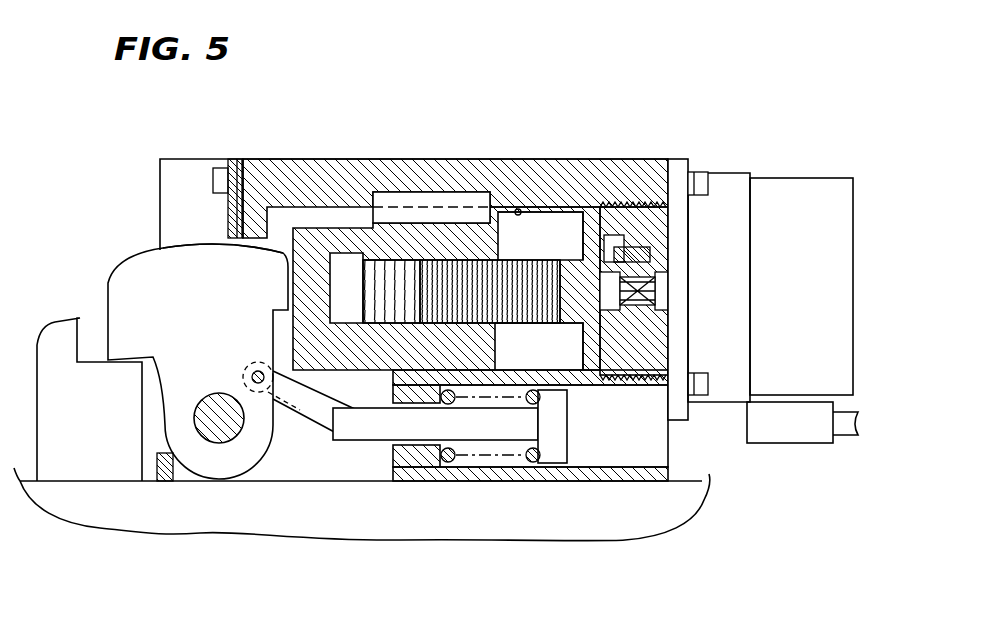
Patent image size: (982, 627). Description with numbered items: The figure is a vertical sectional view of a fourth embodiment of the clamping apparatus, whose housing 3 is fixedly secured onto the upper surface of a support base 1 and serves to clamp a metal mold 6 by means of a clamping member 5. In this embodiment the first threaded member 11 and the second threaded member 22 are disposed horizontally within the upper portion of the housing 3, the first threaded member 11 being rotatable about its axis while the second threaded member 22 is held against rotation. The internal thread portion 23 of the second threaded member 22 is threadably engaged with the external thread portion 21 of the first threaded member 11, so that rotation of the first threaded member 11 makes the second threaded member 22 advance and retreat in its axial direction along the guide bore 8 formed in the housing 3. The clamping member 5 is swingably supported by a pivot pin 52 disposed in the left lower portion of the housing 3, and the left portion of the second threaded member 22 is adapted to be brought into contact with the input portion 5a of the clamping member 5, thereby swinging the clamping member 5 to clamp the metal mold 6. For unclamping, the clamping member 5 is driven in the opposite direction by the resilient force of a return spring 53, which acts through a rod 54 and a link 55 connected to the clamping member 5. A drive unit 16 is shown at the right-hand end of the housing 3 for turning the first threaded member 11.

The support base 1 is at (690, 518).
The housing 3 is at (561, 157).
The clamping member 5 is at (194, 337).
The input portion 5a is at (281, 282).
The metal mold 6 is at (61, 338).
The guide bore 8 is at (518, 209).
The first threaded member 11 is at (661, 257).
The motor 16 is at (740, 170).
The external thread portion 21 is at (522, 268).
The second threaded member 22 is at (323, 205).
The internal thread portion 23 is at (354, 262).
The pivot pin 52 is at (217, 443).
The return spring 53 is at (533, 463).
The rod 54 is at (377, 443).
The link 55 is at (303, 420).